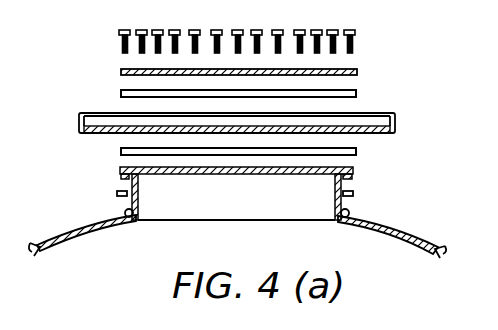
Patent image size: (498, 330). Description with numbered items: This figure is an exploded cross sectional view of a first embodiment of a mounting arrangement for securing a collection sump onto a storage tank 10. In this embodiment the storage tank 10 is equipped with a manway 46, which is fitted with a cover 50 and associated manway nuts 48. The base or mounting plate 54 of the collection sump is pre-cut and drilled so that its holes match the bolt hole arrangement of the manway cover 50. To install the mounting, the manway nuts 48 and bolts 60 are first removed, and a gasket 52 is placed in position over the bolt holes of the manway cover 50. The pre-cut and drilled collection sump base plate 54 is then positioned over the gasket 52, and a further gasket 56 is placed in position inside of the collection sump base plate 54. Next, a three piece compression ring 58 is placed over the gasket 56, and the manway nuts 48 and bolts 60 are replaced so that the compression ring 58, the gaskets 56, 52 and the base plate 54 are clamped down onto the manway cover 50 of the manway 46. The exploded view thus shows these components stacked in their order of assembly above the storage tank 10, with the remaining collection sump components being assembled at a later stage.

The storage tank 10 is at (95, 227).
The manway 46 is at (335, 192).
The manway nuts 48 is at (357, 193).
The manway cover 50 is at (133, 169).
The gasket 52 is at (355, 149).
The collection sump base plate 54 is at (92, 134).
The further gasket 56 is at (122, 92).
The three piece compression ring 58 is at (122, 72).
The bolts 60 is at (123, 40).